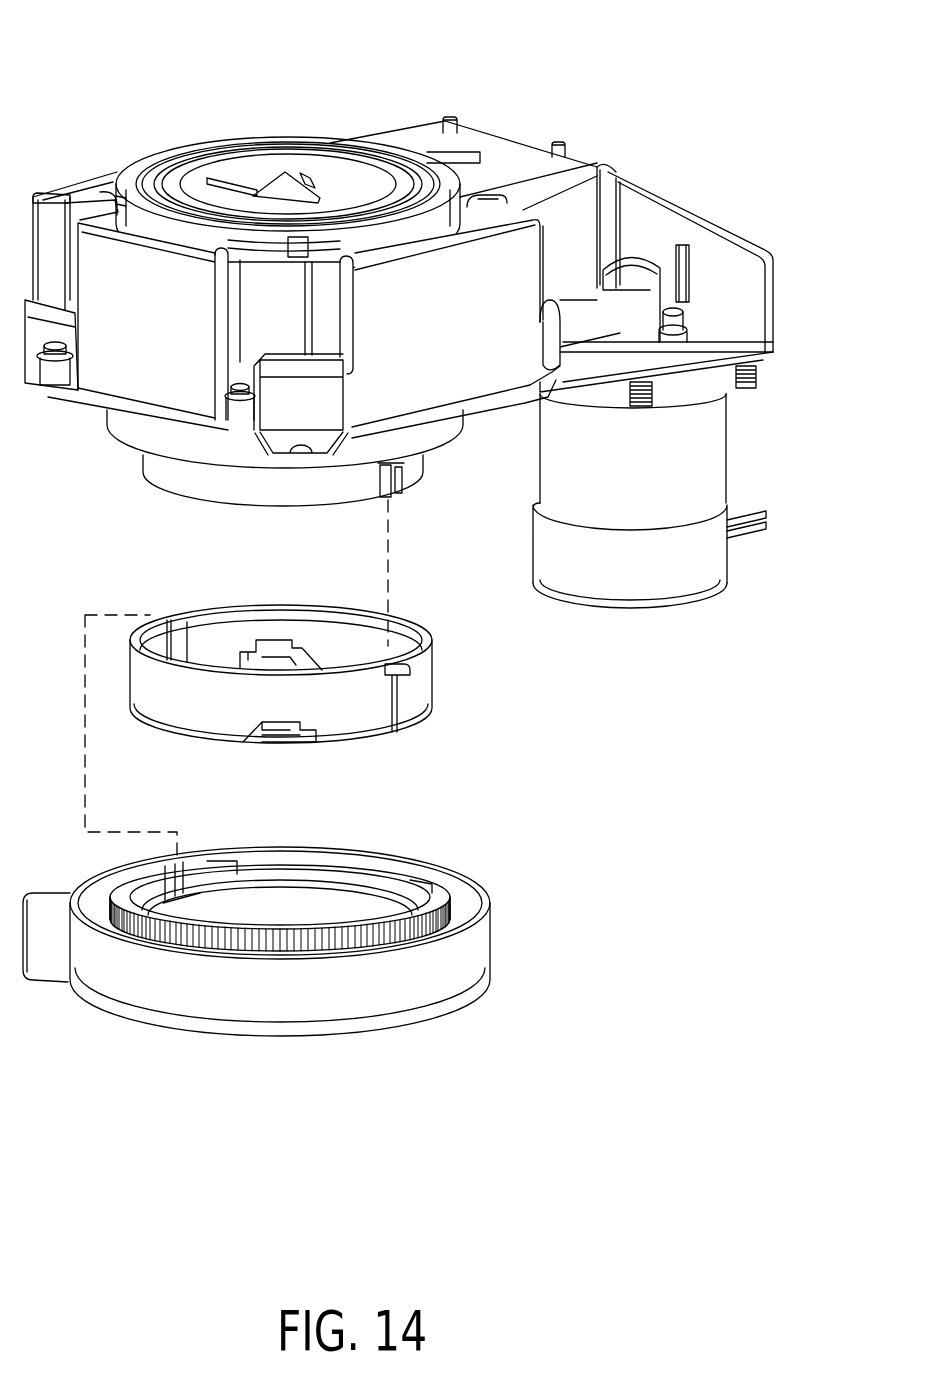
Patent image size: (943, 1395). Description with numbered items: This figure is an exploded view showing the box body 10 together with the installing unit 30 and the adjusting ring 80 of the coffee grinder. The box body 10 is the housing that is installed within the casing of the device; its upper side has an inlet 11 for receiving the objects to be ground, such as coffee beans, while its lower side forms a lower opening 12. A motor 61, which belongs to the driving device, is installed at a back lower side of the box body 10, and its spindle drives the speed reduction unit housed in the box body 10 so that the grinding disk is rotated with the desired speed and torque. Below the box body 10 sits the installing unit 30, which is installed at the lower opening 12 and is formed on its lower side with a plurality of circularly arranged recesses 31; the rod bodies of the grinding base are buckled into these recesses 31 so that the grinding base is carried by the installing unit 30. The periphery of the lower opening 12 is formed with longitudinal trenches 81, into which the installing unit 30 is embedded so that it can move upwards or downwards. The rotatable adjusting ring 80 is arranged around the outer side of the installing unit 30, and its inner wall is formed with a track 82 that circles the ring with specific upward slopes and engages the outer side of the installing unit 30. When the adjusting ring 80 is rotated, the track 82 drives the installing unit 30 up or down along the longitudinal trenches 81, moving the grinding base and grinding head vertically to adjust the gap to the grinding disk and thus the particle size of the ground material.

The box body 10 is at (492, 130).
The inlet 11 is at (246, 165).
The lower opening 12 is at (170, 500).
The installing unit 30 is at (438, 673).
The recess 31 is at (252, 735).
The motor 61 is at (712, 456).
The adjusting ring 80 is at (490, 945).
The longitudinal trench 81 is at (400, 478).
The track 82 is at (243, 890).